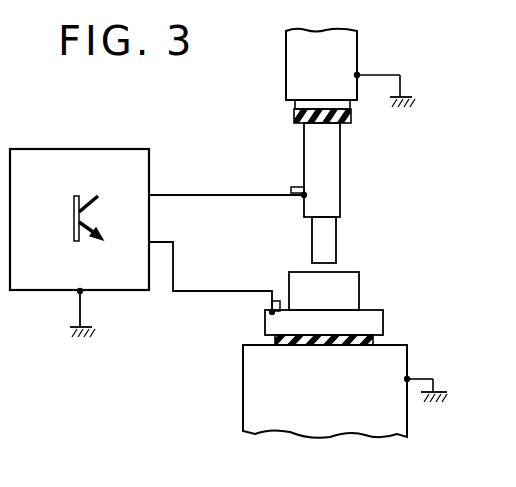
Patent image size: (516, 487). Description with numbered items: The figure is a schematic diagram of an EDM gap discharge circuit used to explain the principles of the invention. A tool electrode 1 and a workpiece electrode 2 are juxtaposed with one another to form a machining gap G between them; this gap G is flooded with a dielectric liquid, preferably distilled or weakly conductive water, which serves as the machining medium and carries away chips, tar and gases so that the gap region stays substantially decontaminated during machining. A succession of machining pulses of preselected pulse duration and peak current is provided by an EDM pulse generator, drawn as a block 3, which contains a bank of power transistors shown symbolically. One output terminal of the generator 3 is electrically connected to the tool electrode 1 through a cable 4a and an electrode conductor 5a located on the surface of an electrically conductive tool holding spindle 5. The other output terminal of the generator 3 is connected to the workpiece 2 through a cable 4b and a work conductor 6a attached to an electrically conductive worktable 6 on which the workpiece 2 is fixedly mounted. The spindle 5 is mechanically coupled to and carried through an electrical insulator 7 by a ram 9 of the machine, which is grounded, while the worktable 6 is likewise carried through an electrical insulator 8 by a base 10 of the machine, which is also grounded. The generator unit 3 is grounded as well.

The EDM pulse generator 3 is at (92, 148).
The cable 4a is at (196, 192).
The cable 4b is at (179, 292).
The tool holding spindle 5 is at (338, 167).
The electrode conductor 5a is at (298, 186).
The electrical insulator 7 is at (294, 103).
The ram 9 is at (352, 48).
The tool electrode 1 is at (333, 238).
The machining gap G is at (330, 269).
The workpiece electrode 2 is at (356, 294).
The worktable 6 is at (380, 320).
The work conductor 6a is at (270, 302).
The electrical insulator 8 is at (380, 338).
The base 10 is at (398, 419).